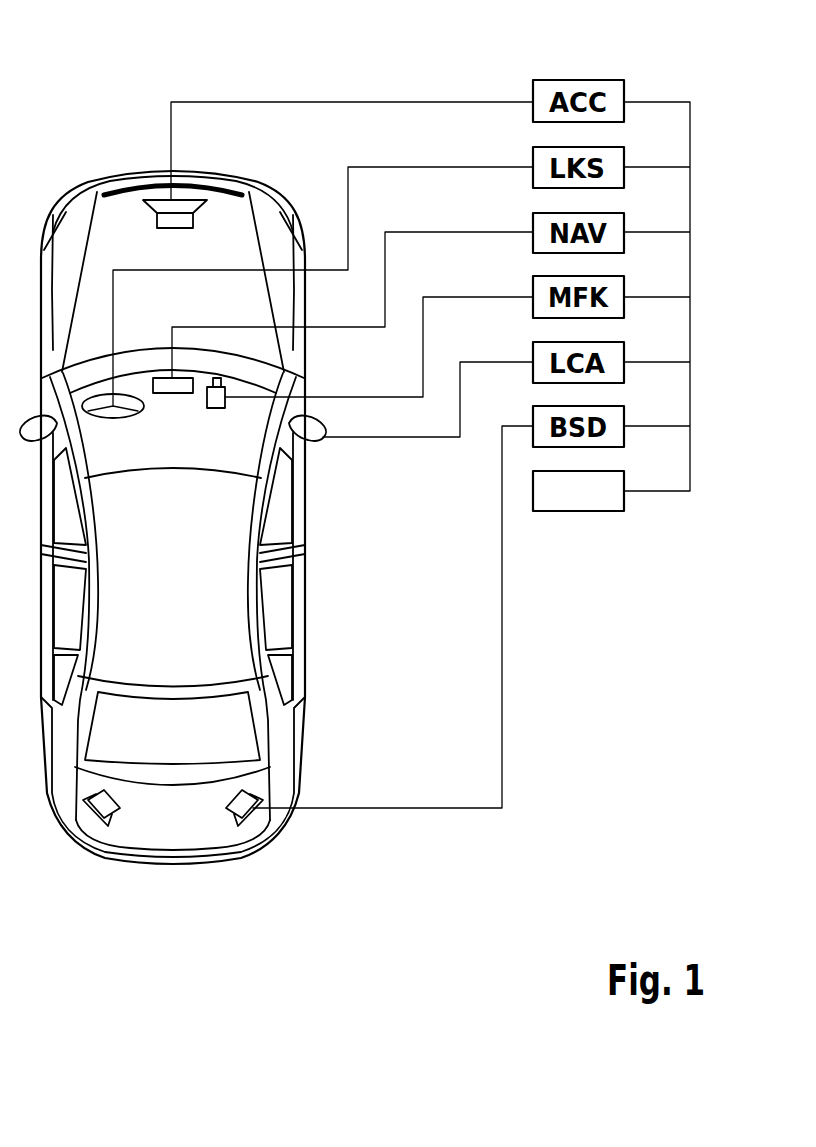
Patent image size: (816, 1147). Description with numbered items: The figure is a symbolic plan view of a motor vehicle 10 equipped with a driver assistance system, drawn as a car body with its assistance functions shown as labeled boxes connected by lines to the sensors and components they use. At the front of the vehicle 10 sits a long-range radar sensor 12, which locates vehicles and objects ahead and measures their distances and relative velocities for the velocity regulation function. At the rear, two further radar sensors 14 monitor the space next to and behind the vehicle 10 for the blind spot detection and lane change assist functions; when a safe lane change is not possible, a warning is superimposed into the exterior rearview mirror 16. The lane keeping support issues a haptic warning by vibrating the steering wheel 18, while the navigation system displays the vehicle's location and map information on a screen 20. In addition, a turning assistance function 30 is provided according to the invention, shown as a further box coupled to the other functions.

The motor vehicle 10 is at (58, 92).
The long-range radar sensor 12 is at (156, 222).
The radar sensors 14 is at (228, 810).
The exterior rearview mirror 16 is at (316, 446).
The steering wheel 18 is at (118, 418).
The screen 20 is at (172, 393).
The turning assistance function 30 is at (580, 511).